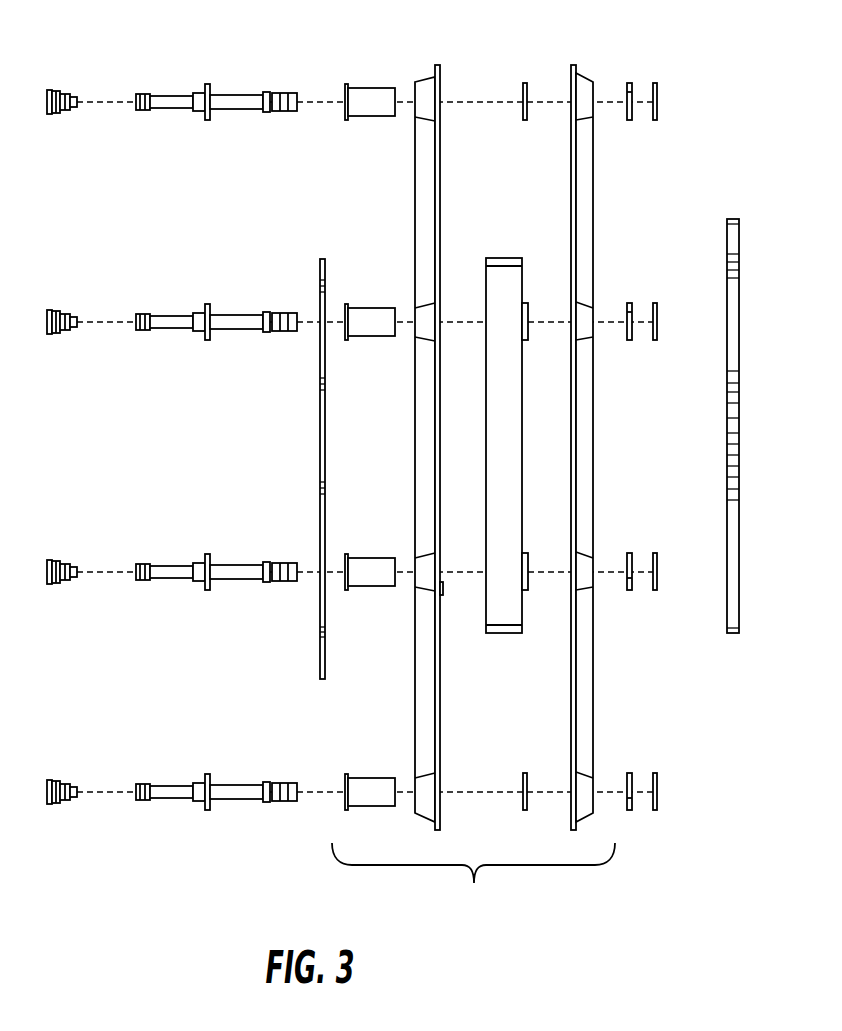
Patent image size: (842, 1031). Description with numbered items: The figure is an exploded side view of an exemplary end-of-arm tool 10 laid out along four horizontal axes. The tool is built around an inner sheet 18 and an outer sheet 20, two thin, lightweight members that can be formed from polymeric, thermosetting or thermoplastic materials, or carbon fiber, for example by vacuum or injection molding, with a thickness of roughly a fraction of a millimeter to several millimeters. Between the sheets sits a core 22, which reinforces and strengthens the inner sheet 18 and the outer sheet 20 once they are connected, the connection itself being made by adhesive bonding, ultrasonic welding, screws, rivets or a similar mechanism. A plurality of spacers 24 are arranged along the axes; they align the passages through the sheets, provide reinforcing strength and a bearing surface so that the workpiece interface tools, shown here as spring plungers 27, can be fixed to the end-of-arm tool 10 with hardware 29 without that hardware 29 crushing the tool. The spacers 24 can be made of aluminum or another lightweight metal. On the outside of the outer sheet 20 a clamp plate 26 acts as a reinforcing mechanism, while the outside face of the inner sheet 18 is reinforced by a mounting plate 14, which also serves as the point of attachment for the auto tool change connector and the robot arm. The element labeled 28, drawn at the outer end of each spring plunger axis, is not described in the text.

The end-of-arm tool 10 is at (473, 882).
The mounting plate 14 is at (739, 240).
The inner sheet 18 is at (587, 219).
The outer sheet 20 is at (423, 78).
The core 22 is at (502, 259).
The spacer 24 is at (371, 95).
The clamp plate 26 is at (320, 288).
The spring plunger 27 is at (180, 100).
The nozzle cap 28 is at (52, 90).
The hardware 29 is at (524, 84).